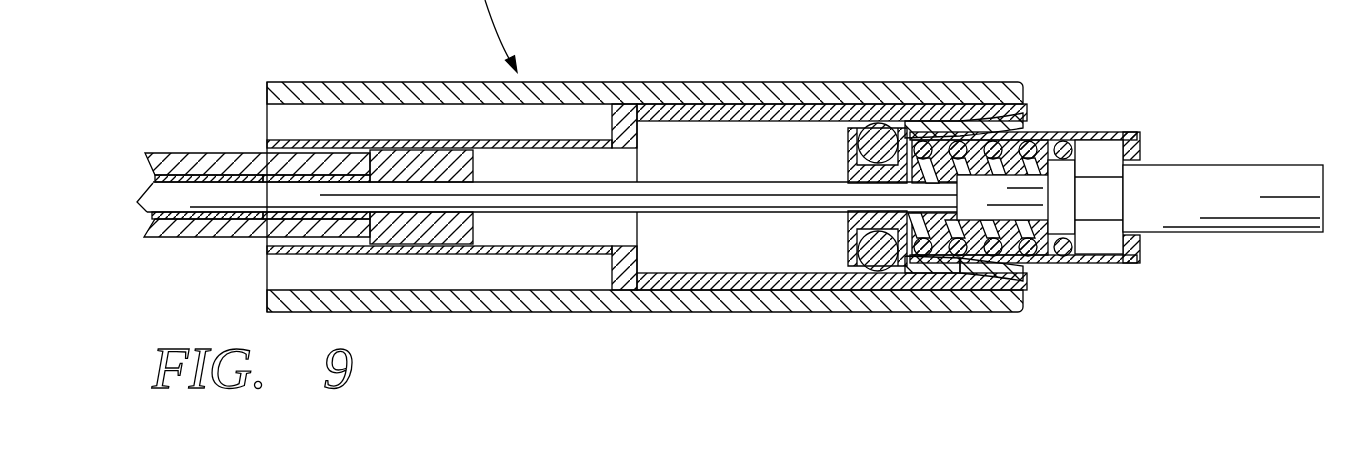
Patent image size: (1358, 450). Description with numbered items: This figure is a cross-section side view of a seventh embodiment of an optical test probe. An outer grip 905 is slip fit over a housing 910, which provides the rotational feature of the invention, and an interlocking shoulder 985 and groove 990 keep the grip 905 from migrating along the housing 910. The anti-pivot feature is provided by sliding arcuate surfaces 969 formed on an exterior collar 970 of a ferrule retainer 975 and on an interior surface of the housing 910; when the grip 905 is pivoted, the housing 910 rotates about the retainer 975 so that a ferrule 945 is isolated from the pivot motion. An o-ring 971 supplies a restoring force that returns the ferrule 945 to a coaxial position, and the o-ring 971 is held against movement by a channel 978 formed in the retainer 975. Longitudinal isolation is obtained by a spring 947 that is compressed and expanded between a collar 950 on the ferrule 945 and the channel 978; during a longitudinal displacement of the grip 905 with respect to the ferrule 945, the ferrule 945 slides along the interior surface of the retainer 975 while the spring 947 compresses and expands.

The grip 905 is at (336, 82).
The housing 910 is at (720, 126).
The ferrule 945 is at (1305, 168).
The spring 947 is at (1077, 242).
The collar 950 is at (1110, 190).
The sliding arcuate surfaces 969 is at (918, 275).
The exterior collar 970 is at (987, 278).
The o-ring 971 is at (856, 243).
The ferrule retainer 975 is at (1102, 132).
The channel 978 is at (848, 158).
The shoulder 985 is at (968, 113).
The groove 990 is at (905, 135).